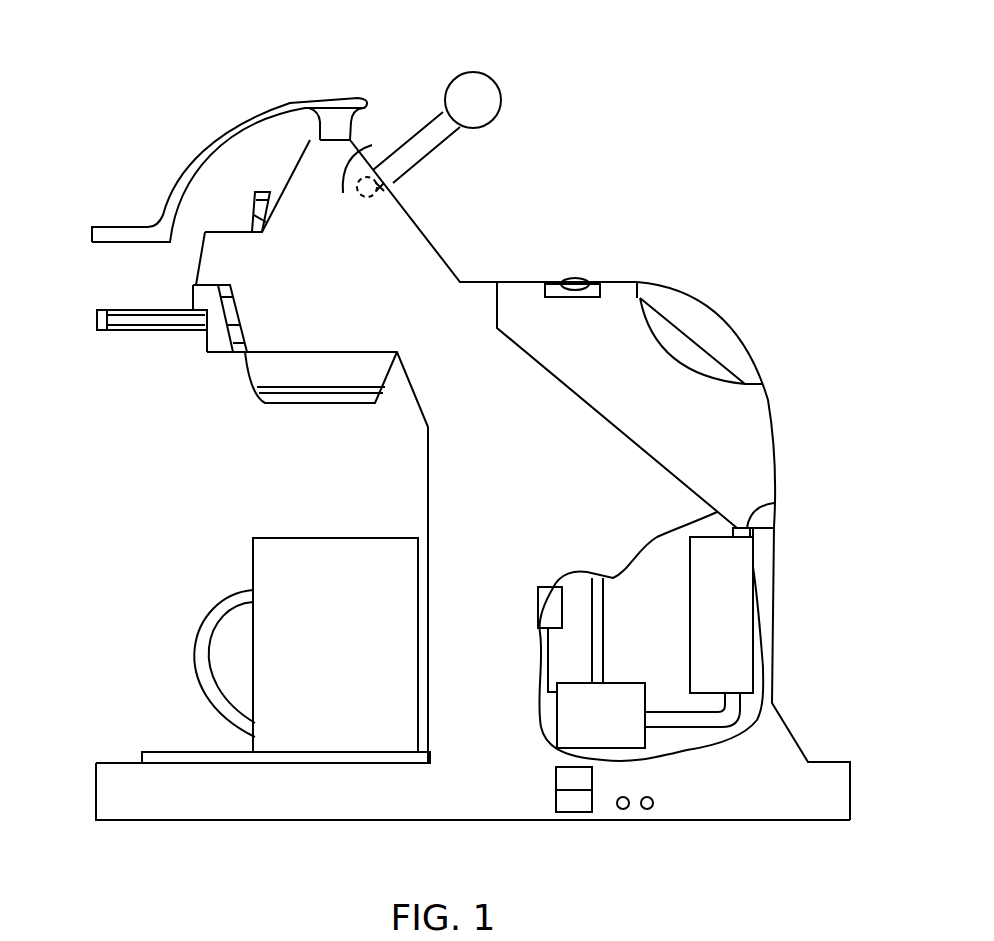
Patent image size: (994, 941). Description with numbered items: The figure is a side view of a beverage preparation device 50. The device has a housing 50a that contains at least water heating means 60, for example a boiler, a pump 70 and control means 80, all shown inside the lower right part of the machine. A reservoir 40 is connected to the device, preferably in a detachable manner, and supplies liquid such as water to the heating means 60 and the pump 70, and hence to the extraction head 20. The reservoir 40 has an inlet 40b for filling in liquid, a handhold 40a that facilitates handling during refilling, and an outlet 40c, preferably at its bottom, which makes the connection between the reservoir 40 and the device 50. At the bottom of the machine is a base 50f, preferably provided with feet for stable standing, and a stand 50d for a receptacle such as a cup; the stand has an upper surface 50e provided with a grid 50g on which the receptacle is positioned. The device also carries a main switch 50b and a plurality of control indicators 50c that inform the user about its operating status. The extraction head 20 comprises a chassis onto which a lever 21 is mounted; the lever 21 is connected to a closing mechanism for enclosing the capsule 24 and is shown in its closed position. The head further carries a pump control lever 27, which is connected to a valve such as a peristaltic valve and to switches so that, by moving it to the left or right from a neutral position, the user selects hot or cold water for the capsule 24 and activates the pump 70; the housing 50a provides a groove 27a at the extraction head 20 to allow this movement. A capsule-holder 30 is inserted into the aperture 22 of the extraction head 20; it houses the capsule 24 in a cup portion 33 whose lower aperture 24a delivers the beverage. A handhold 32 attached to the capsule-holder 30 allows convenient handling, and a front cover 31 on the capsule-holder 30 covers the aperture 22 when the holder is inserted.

The extraction head 20 is at (365, 155).
The lever 21 is at (233, 130).
The aperture 22 is at (230, 332).
The capsule 24 is at (258, 393).
The lower aperture 24a is at (318, 403).
The pump control lever 27 is at (477, 92).
The groove 27a is at (385, 190).
The capsule-holder 30 is at (222, 342).
The front cover 31 is at (200, 298).
The handhold 32 is at (120, 317).
The cup portion 33 is at (268, 375).
The reservoir 40 is at (743, 428).
The handhold 40a is at (710, 327).
The inlet 40b is at (597, 280).
The outlet 40c is at (778, 505).
The beverage preparation device 50 is at (576, 272).
The housing 50a is at (487, 750).
The main switch 50b is at (573, 815).
The control indicators 50c is at (633, 815).
The stand 50d is at (105, 795).
The upper surface 50e is at (210, 755).
The base 50f is at (260, 822).
The grid 50g is at (180, 750).
The water heating means 60 is at (743, 622).
The pump 70 is at (633, 735).
The control means 80 is at (552, 610).